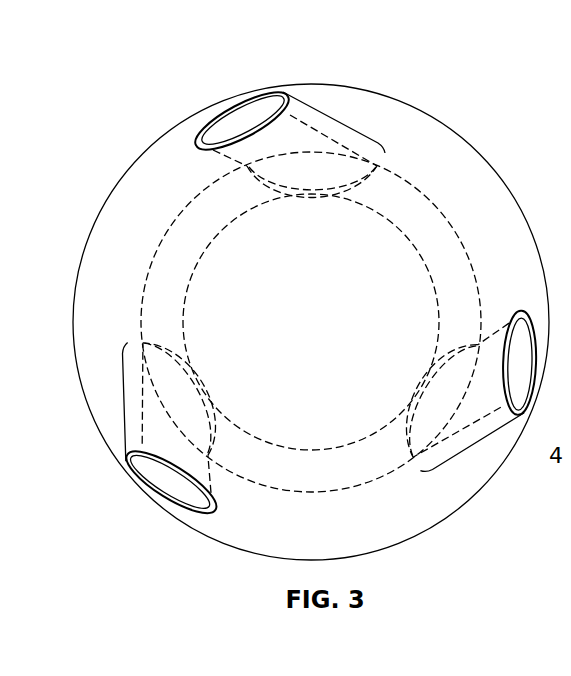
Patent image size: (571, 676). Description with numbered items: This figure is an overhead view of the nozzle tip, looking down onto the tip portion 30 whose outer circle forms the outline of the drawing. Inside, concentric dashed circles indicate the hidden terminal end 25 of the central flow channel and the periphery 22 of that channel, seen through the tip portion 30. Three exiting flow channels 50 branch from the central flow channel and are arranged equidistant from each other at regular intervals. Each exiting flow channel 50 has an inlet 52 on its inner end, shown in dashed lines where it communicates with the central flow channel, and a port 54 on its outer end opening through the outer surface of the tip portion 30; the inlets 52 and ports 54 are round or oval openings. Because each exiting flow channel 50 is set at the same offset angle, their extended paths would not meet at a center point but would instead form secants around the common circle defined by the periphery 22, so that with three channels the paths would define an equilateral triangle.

The tip portion 30 is at (132, 165).
The periphery of the central flow channel 22 is at (428, 196).
The terminal end of the central flow channel 25 is at (430, 245).
The exiting flow channel 50 is at (334, 116).
The inlet 52 is at (353, 196).
The port 54 is at (243, 104).